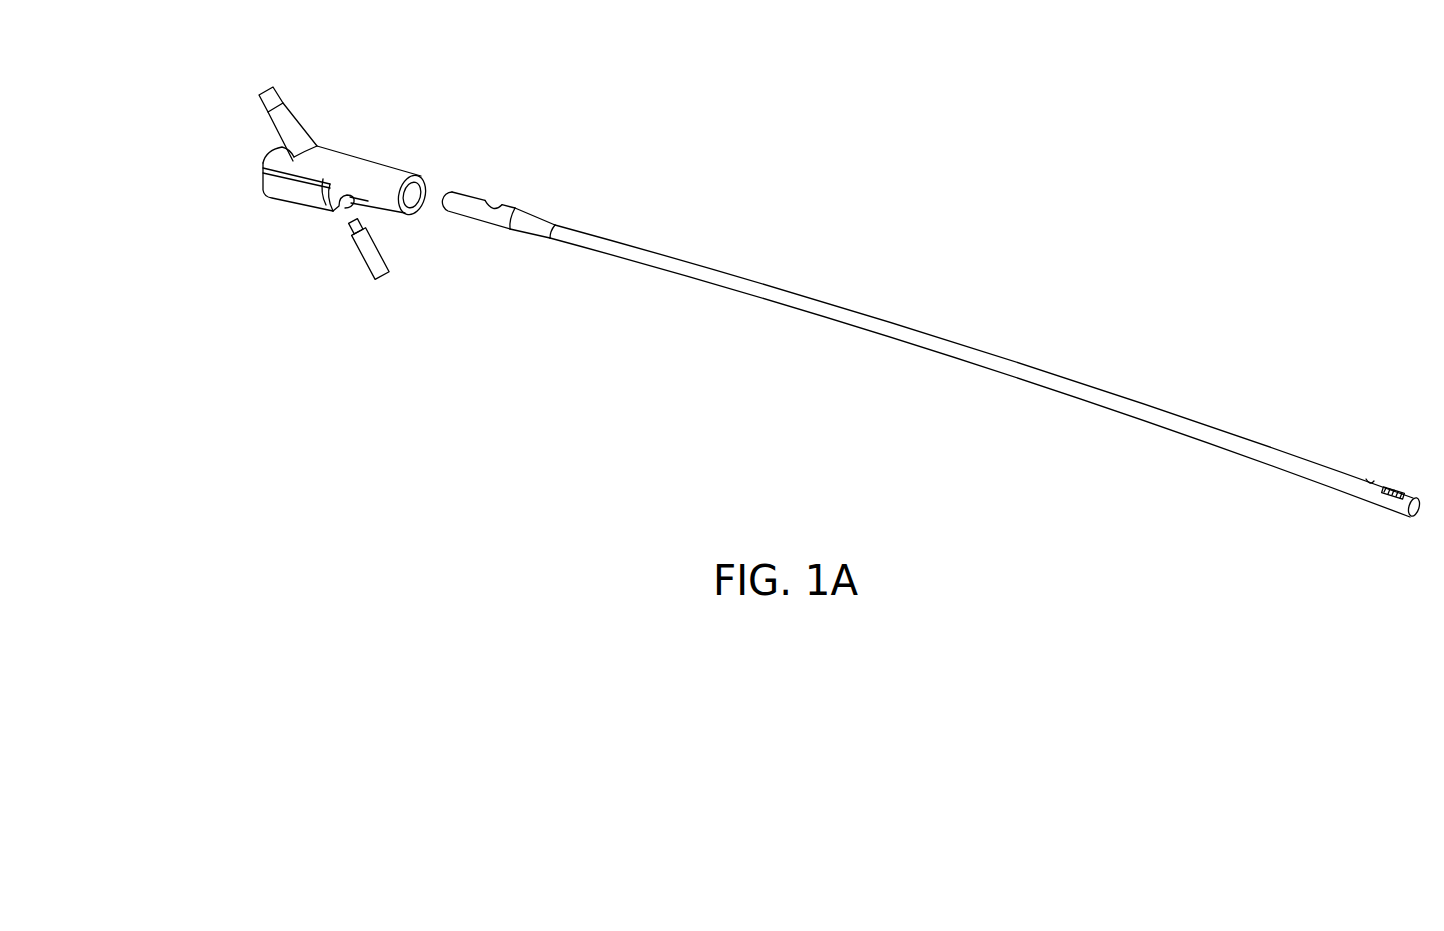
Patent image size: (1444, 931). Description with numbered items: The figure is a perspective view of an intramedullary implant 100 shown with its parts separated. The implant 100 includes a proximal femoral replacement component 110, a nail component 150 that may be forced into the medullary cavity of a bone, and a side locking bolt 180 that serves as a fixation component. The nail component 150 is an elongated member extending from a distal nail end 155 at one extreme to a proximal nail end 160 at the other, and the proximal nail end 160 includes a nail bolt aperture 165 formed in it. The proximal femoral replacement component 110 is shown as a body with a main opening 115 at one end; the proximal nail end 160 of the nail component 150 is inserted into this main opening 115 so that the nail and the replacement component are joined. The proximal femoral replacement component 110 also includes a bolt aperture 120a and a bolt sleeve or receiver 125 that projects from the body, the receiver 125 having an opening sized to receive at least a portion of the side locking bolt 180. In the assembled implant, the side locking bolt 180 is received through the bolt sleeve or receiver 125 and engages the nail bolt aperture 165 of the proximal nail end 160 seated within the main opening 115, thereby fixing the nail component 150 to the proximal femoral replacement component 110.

The intramedullary implant 100 is at (879, 140).
The proximal femoral replacement component 110 is at (401, 57).
The main opening 115 is at (423, 170).
The bolt aperture 120a is at (344, 206).
The bolt sleeve or receiver 125 is at (253, 132).
The nail component 150 is at (840, 366).
The distal nail end 155 is at (1380, 459).
The proximal nail end 160 is at (477, 239).
The nail bolt aperture 165 is at (494, 202).
The side locking bolt 180 is at (335, 275).